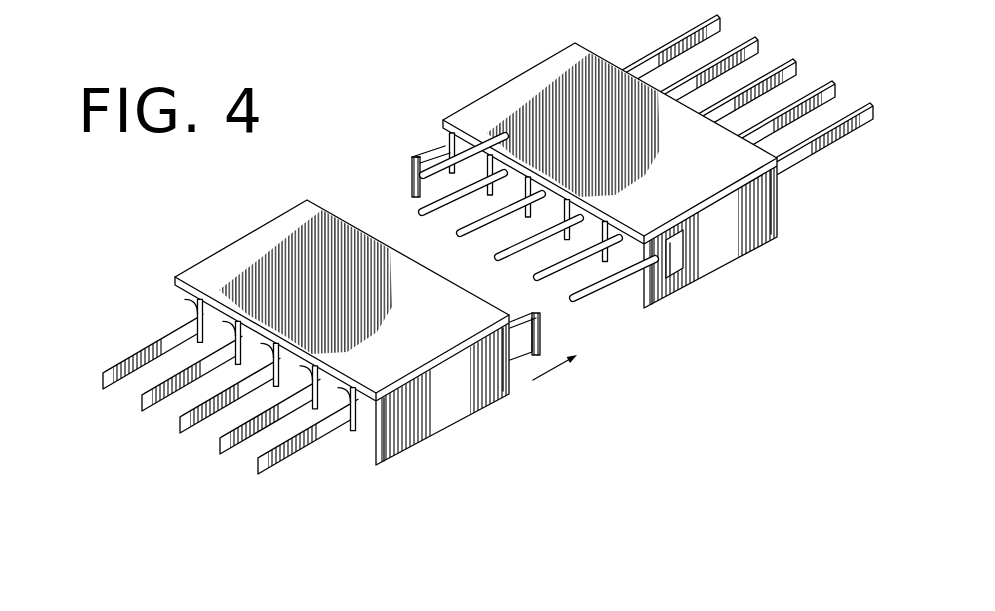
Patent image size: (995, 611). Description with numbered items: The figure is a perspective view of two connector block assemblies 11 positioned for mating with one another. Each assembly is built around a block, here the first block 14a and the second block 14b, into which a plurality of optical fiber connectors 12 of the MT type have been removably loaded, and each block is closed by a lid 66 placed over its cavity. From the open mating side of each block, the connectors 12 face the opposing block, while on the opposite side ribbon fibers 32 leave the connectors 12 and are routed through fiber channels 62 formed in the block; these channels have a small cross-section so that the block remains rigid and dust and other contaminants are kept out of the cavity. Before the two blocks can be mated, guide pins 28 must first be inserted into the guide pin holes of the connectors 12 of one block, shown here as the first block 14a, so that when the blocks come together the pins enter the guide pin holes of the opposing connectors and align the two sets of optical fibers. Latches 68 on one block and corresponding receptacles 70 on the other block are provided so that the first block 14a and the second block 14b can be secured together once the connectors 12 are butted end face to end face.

The connector block assembly 11 is at (487, 278).
The optical fiber connector 12 is at (616, 292).
The first block 14a is at (490, 199).
The second block 14b is at (322, 379).
The guide pins 28 is at (485, 205).
The ribbon fiber 32 is at (817, 152).
The fiber channels 62 is at (188, 312).
The lid 66 is at (562, 88).
The latches 68 is at (425, 150).
The receptacles 70 is at (678, 262).